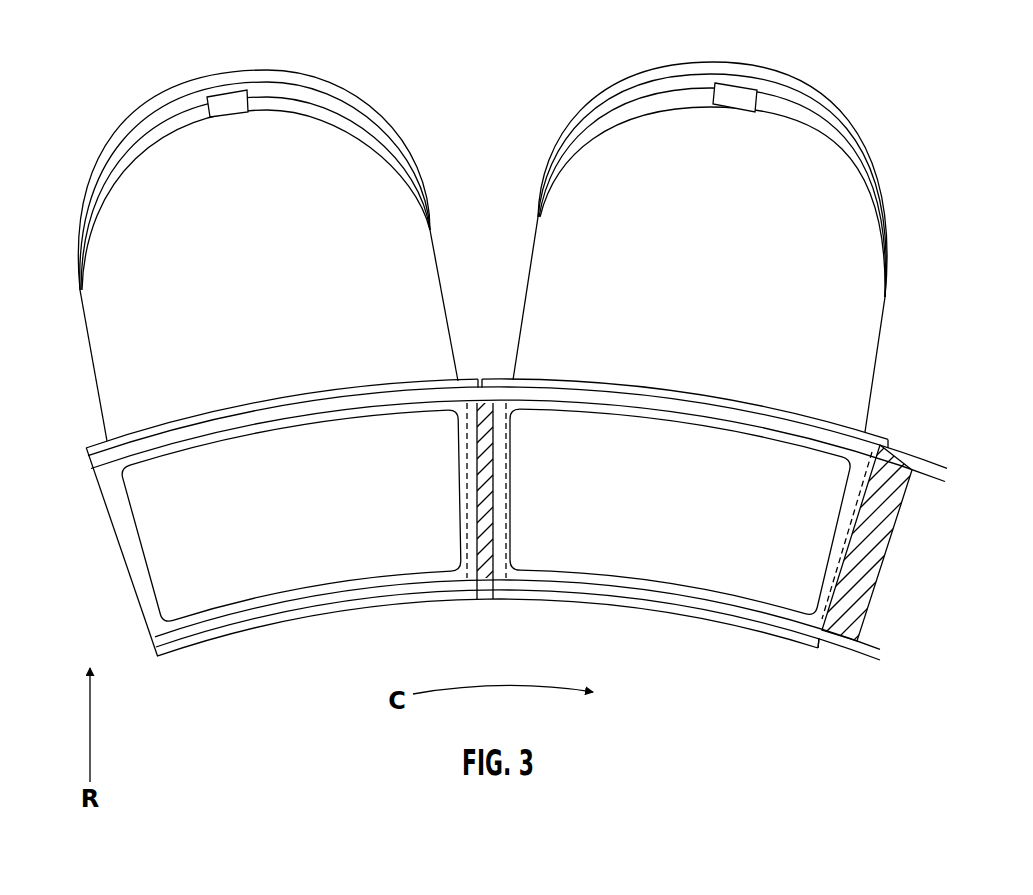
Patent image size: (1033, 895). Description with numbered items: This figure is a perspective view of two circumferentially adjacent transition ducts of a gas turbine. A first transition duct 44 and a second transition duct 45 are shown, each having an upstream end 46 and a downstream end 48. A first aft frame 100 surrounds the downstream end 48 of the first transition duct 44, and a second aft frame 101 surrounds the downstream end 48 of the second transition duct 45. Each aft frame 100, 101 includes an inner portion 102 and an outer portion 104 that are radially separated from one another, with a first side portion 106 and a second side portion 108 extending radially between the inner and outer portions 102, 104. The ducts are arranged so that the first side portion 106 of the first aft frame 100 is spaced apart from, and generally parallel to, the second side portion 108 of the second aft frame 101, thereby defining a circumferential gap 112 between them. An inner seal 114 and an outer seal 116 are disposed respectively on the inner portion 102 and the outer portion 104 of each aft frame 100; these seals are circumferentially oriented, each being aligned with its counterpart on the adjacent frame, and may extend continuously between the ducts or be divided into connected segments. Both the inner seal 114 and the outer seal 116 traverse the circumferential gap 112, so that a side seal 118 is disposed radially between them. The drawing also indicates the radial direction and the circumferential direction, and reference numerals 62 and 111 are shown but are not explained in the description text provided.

The first transition duct 44 is at (60, 108).
The second transition duct 45 is at (900, 98).
The upstream end 46 is at (363, 100).
The downstream end 48 is at (57, 400).
The first end of band 62 is at (108, 500).
The first aft frame 100 is at (122, 548).
The second aft frame 101 is at (810, 641).
The inner portion 102 is at (690, 541).
The outer portion 104 is at (237, 435).
The first side portion 106 is at (457, 503).
The second side portion 108 is at (139, 539).
The end overlap portion 111 is at (916, 458).
The circumferential gap 112 is at (489, 412).
The inner seal 114 is at (373, 598).
The outer seal 116 is at (257, 410).
The side seal 118 is at (488, 550).